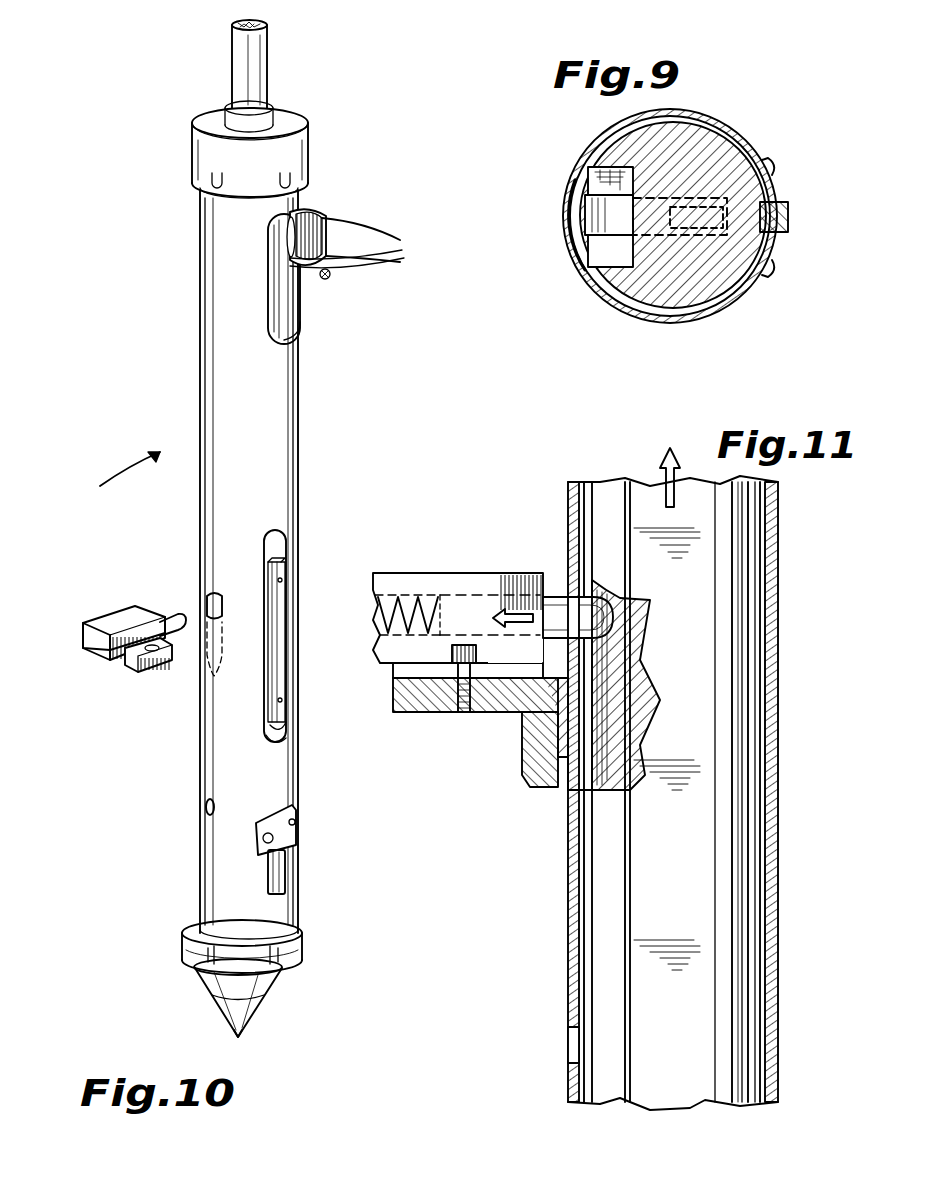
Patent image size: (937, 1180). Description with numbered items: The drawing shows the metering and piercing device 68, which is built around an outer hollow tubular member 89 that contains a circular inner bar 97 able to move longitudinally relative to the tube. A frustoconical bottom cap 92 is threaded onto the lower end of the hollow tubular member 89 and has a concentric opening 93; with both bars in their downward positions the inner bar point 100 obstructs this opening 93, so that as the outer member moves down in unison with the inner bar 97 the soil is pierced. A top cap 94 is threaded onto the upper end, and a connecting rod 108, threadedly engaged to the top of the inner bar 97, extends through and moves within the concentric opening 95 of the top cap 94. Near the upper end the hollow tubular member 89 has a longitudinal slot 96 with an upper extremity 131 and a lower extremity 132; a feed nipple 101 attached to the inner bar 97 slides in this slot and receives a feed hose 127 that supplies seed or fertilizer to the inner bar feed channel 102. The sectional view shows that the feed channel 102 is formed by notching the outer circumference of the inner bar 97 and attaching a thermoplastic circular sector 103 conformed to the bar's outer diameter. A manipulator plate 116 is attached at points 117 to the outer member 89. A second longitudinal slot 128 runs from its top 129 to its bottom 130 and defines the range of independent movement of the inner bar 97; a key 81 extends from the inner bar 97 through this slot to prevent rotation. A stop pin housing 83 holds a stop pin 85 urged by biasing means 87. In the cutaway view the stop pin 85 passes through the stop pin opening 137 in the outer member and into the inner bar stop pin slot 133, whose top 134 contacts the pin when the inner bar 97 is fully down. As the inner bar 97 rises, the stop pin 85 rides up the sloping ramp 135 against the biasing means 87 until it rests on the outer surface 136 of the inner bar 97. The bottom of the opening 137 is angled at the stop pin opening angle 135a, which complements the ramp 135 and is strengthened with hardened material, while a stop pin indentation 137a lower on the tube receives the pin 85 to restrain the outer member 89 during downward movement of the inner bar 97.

In FIG. 10, the metering and piercing device 68 is at (112, 476).
In FIG. 10, the key 81 is at (284, 575).
In FIG. 10, the stop pin housing 83 is at (85, 625).
In FIG. 11, the stop pin housing 83 is at (482, 572).
In FIG. 10, the stop pin 85 is at (168, 618).
In FIG. 11, the stop pin 85 is at (548, 598).
In FIG. 10, the biasing means 87 is at (148, 655).
In FIG. 11, the biasing means 87 is at (405, 598).
In FIG. 10, the outer hollow tubular member 89 is at (300, 432).
In FIG. 9, the outer hollow tubular member 89 is at (602, 140).
In FIG. 11, the outer hollow tubular member 89 is at (778, 790).
In FIG. 10, the bottom cap 92 is at (288, 967).
In FIG. 10, the opening 93 is at (266, 1004).
In FIG. 10, the top cap 94 is at (306, 143).
In FIG. 10, the concentric opening 95 is at (276, 104).
In FIG. 10, the longitudinal slot 96 is at (300, 318).
In FIG. 9, the inner bar 97 is at (700, 130).
In FIG. 11, the inner bar 97 is at (740, 910).
In FIG. 10, the inner bar point 100 is at (246, 1035).
In FIG. 10, the feed nipple 101 is at (332, 218).
In FIG. 9, the inner bar feed channel 102 is at (605, 250).
In FIG. 9, the circular sector 103 is at (580, 218).
In FIG. 10, the connecting rod 108 is at (268, 55).
In FIG. 10, the manipulator plate 116 is at (286, 862).
In FIG. 9, the manipulator plate 116 is at (786, 205).
In FIG. 10, the attachment points 117 is at (296, 823).
In FIG. 9, the attachment points 117 is at (774, 166).
In FIG. 10, the feed hose 127 is at (372, 258).
In FIG. 10, the longitudinal slot 128 is at (284, 718).
In FIG. 10, the top of longitudinal slot 129 is at (272, 530).
In FIG. 10, the bottom of longitudinal slot 130 is at (284, 738).
In FIG. 10, the upper extremity 131 is at (310, 215).
In FIG. 10, the lower extremity 132 is at (296, 344).
In FIG. 11, the stop pin slot 133 is at (625, 660).
In FIG. 11, the top of stop pin slot 134 is at (630, 600).
In FIG. 11, the ramp 135 is at (610, 735).
In FIG. 11, the stop pin opening angle 135a is at (530, 735).
In FIG. 11, the outer surface 136 is at (585, 792).
In FIG. 10, the stop pin opening 137 is at (207, 598).
In FIG. 11, the stop pin opening 137 is at (573, 597).
In FIG. 10, the stop pin indentation 137a is at (206, 812).
In FIG. 11, the stop pin indentation 137a is at (560, 1043).